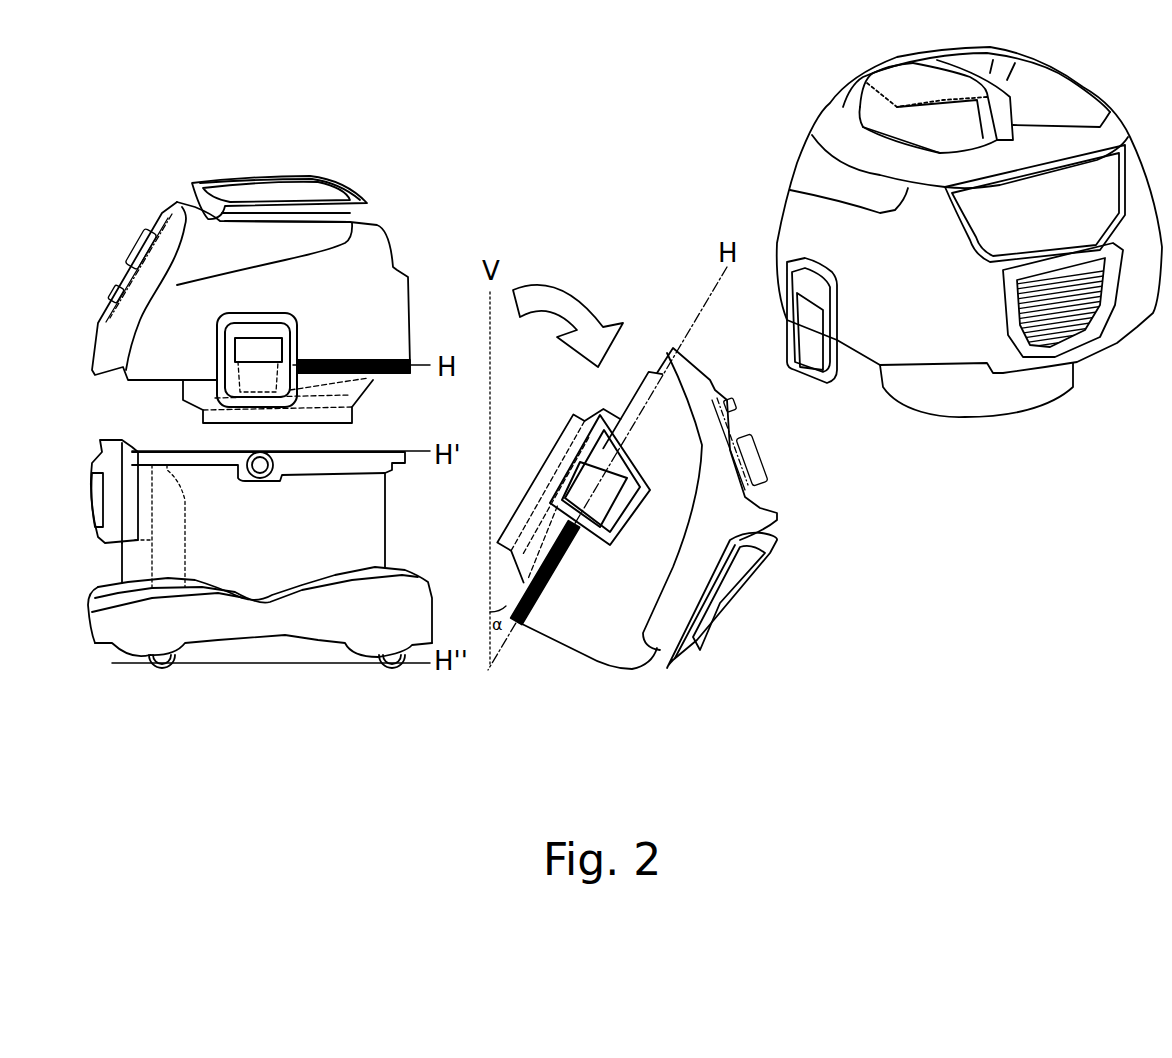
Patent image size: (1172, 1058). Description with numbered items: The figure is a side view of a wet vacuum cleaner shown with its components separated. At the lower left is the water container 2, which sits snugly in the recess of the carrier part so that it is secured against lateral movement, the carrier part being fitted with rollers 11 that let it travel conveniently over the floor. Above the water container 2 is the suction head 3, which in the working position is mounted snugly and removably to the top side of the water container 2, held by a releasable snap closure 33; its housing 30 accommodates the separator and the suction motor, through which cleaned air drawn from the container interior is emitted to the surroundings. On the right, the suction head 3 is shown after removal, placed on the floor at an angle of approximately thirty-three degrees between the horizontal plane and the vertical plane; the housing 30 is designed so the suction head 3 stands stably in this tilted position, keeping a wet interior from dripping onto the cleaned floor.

The water container 2 is at (281, 608).
The suction head 3 is at (434, 445).
The rollers 11 is at (163, 665).
The housing 30 is at (615, 648).
The releasable snap closure 33 is at (347, 407).